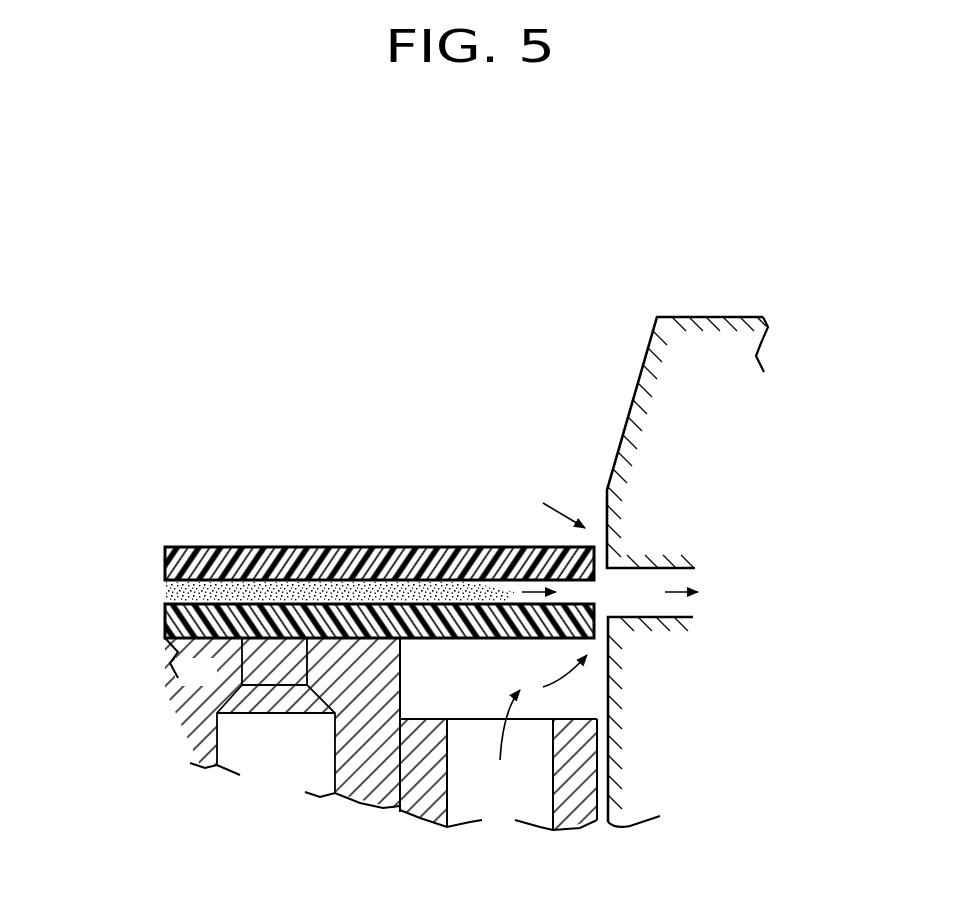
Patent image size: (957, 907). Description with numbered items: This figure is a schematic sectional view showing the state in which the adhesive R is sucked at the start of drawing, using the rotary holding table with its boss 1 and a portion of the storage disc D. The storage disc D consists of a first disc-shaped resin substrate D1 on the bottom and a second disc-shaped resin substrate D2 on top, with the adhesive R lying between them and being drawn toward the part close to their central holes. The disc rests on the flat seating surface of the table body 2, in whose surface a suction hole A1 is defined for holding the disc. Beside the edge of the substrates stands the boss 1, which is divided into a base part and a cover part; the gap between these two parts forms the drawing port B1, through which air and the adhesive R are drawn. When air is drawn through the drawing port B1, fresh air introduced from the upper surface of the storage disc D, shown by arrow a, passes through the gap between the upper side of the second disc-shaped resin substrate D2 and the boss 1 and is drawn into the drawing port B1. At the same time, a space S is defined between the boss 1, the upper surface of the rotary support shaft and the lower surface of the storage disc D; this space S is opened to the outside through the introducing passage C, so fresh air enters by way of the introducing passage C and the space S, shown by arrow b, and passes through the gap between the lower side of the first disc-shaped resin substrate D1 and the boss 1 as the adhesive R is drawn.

The boss 1 is at (748, 412).
The storage disc D is at (95, 542).
The first disc-shaped resin substrate D1 is at (172, 622).
The second disc-shaped resin substrate D2 is at (172, 565).
The adhesive R is at (388, 592).
The suction hole A1 is at (262, 668).
The table body 2 is at (365, 698).
The space S is at (458, 699).
The introducing passage C is at (511, 826).
The drawing port B1 is at (645, 610).
The arrow a is at (564, 507).
The arrow b is at (566, 680).